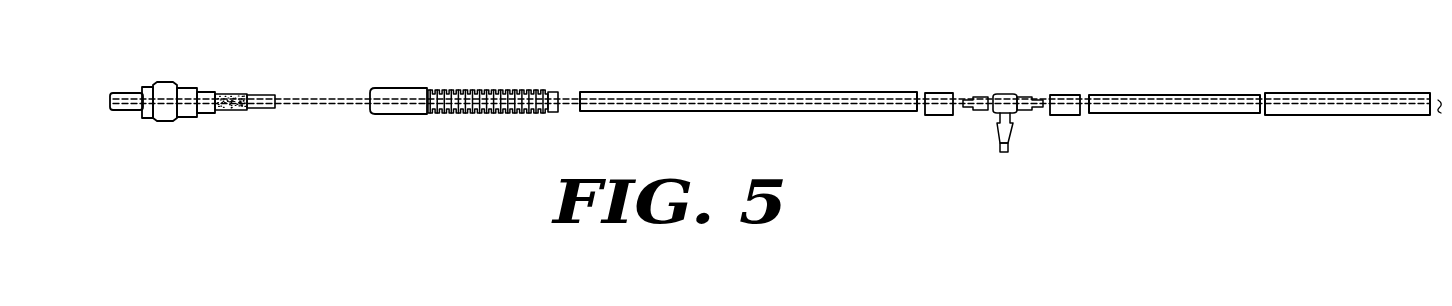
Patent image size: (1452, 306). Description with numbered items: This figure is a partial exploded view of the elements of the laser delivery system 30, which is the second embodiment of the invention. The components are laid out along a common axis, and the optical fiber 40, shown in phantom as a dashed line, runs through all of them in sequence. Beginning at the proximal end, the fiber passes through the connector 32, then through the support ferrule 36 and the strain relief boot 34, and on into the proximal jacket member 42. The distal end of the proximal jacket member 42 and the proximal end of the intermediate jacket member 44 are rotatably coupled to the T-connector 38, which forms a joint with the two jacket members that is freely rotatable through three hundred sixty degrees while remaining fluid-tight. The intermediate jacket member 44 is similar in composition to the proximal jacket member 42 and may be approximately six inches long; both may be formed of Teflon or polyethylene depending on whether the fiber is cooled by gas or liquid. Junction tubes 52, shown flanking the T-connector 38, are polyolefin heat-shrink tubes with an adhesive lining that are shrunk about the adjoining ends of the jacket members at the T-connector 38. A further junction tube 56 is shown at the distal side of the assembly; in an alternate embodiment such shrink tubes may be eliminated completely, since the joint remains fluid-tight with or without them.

The laser delivery system 30 is at (592, 53).
The connector 32 is at (163, 119).
The strain relief boot 34 is at (395, 93).
The support ferrule 36 is at (257, 90).
The T-connector 38 is at (1003, 94).
The optical fiber 40 is at (327, 104).
The proximal jacket member 42 is at (703, 93).
The intermediate jacket member 44 is at (1163, 95).
The junction tubes 52 is at (943, 93).
The junction tube 56 is at (1342, 93).